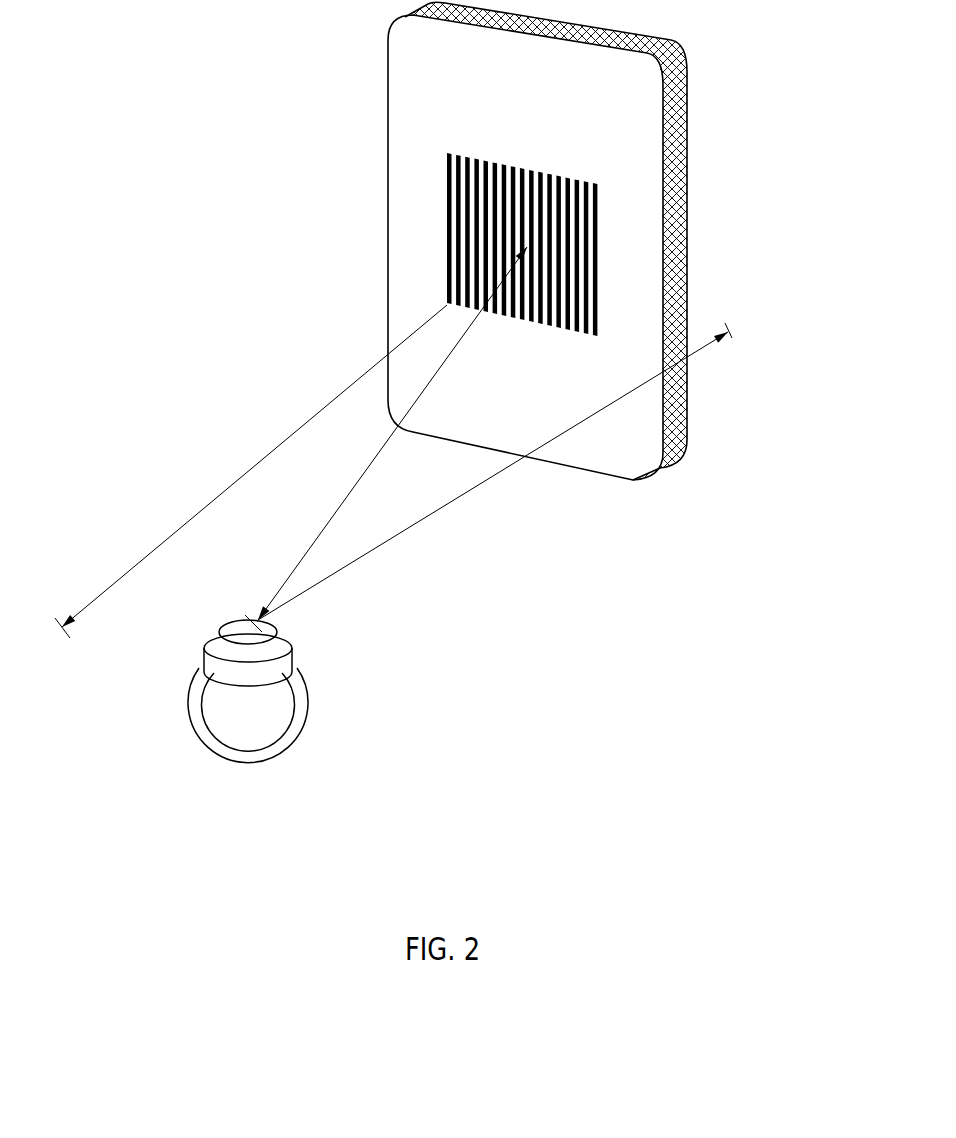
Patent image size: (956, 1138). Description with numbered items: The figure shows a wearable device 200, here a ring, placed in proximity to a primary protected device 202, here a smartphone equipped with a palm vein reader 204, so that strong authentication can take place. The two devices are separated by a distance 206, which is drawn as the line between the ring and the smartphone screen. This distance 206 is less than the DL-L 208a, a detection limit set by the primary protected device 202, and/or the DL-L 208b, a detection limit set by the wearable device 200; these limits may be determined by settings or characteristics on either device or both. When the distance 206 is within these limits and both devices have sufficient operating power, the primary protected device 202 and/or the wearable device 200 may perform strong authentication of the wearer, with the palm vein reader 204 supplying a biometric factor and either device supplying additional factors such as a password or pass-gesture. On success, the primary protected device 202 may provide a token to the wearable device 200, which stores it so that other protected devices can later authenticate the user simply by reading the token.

The wearable device 200 is at (290, 620).
The primary protected device 202 is at (700, 118).
The palm vein reader 204 is at (610, 263).
The distance 206 is at (386, 439).
The DL-L set by primary PD 208a is at (251, 471).
The DL-L set by WD 208b is at (495, 471).